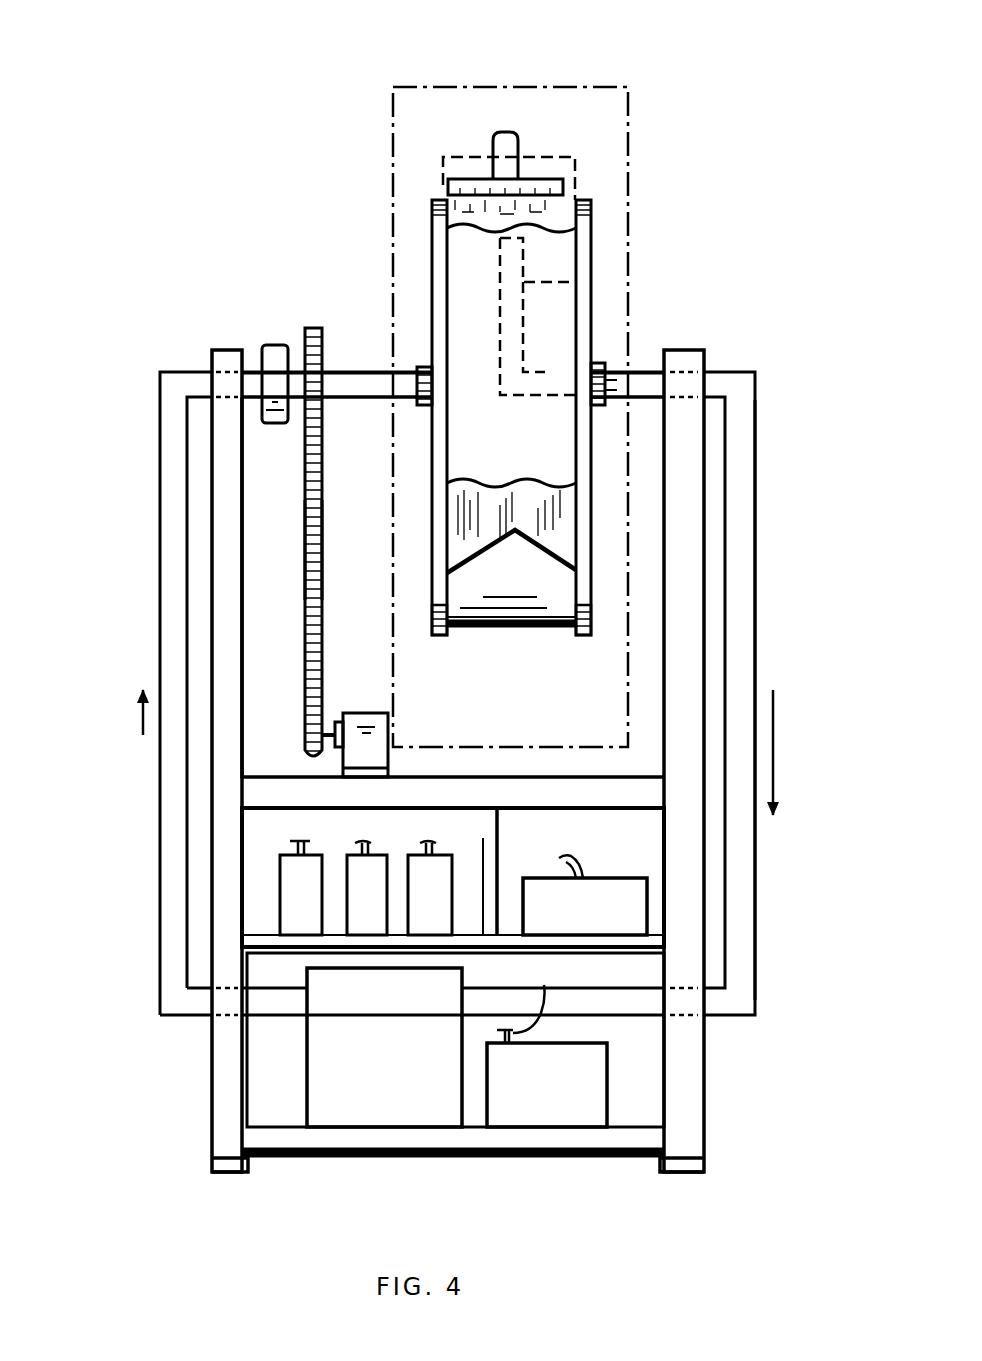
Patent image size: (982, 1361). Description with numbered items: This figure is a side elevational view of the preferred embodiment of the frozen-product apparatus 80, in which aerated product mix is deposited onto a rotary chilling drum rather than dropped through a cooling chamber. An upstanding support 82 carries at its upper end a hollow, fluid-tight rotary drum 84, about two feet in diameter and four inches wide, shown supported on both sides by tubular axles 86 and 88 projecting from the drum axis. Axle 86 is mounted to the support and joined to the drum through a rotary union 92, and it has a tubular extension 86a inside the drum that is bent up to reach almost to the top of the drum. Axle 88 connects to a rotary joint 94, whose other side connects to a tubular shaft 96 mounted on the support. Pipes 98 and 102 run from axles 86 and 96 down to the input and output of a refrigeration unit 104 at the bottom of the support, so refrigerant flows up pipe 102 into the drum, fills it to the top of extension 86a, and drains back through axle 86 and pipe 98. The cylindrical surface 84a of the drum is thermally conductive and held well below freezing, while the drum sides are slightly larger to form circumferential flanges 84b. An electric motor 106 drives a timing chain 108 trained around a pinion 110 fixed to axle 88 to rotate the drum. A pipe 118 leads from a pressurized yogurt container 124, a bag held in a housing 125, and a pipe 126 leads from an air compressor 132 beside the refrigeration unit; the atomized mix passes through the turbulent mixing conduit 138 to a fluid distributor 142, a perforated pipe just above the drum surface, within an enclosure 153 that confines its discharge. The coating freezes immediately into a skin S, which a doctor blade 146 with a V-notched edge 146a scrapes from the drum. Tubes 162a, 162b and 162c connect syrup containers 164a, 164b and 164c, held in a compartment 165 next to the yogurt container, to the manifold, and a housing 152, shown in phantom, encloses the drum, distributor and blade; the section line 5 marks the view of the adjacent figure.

The apparatus 80 is at (120, 344).
The upstanding support 82 is at (212, 1085).
The rotary drum 84 is at (440, 254).
The cylindrical surface 84a is at (520, 628).
The circumferential flanges 84b is at (437, 638).
The tubular axle 86 is at (595, 396).
The tubular extension 86a is at (525, 268).
The tubular axle 88 is at (352, 385).
The rotary union 92 is at (605, 375).
The rotary joint 94 is at (278, 345).
The tubular shaft 96 is at (245, 368).
The pipe 98 is at (757, 618).
The pipe 102 is at (162, 533).
The refrigeration unit 104 is at (384, 1047).
The electric motor 106 is at (365, 712).
The timing chain 108 is at (322, 532).
The pinion 110 is at (322, 330).
The pipe 118 is at (592, 868).
The pressurized container 124 is at (585, 906).
The housing 125 is at (600, 810).
The pipe 126 is at (526, 999).
The air compressor 132 is at (515, 1118).
The turbulent mixing conduit 138 is at (529, 130).
The fluid distributor 142 is at (445, 185).
The doctor blade 146 is at (512, 486).
The blade edge 146a is at (522, 540).
The housing 152 is at (577, 87).
The enclosure 153 is at (575, 157).
The tube 162a is at (288, 844).
The tube 162b is at (356, 846).
The tube 162c is at (424, 846).
The pressurized syrup container 164a is at (290, 882).
The pressurized syrup container 164b is at (360, 904).
The pressurized syrup container 164c is at (440, 886).
The compartment 165 is at (483, 838).
The section line 5 is at (432, 45).
The skin S is at (595, 215).